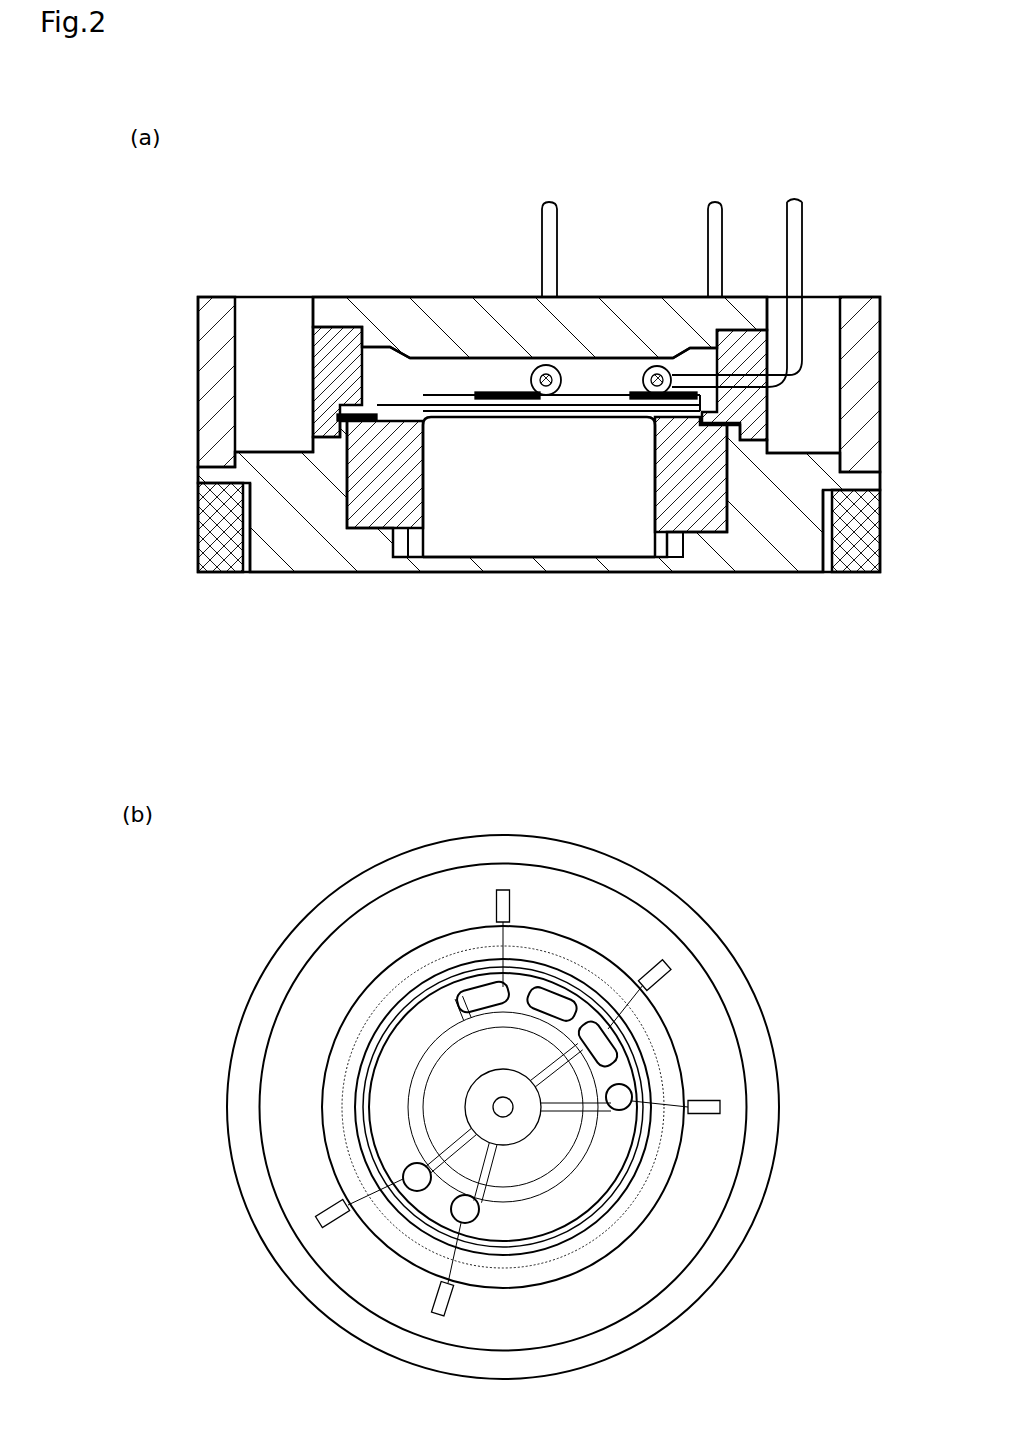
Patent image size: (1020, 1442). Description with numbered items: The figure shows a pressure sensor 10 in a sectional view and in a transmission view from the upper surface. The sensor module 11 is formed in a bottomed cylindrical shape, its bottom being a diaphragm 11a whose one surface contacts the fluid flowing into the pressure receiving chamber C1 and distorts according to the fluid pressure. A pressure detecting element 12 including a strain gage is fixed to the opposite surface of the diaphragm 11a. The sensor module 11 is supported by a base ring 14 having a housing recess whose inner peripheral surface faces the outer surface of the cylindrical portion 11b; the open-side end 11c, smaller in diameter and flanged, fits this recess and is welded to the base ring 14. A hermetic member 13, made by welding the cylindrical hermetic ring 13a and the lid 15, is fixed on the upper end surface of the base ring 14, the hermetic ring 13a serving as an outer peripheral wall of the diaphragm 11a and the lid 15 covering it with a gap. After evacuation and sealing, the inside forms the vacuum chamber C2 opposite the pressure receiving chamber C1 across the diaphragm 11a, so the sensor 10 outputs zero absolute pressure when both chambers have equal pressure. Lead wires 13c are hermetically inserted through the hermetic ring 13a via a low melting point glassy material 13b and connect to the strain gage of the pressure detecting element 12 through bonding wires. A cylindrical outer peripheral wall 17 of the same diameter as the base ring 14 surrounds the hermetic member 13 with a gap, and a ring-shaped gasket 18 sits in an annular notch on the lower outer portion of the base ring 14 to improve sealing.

The pressure sensor 10 is at (650, 213).
The sensor module 11 is at (525, 538).
The diaphragm 11a is at (527, 417).
The cylindrical portion 11b is at (658, 477).
The open-side end 11c is at (410, 543).
The pressure detecting element 12 is at (617, 392).
The hermetic member 13 is at (311, 366).
The hermetic ring 13a is at (335, 390).
The low melting point glassy material 13b is at (767, 387).
The lead wires 13c is at (803, 252).
The base ring 14 is at (757, 547).
The lid 15 is at (500, 320).
The outer peripheral wall 17 is at (200, 298).
The gasket 18 is at (222, 555).
The pressure receiving chamber C1 is at (568, 533).
The vacuum chamber C2 is at (430, 383).